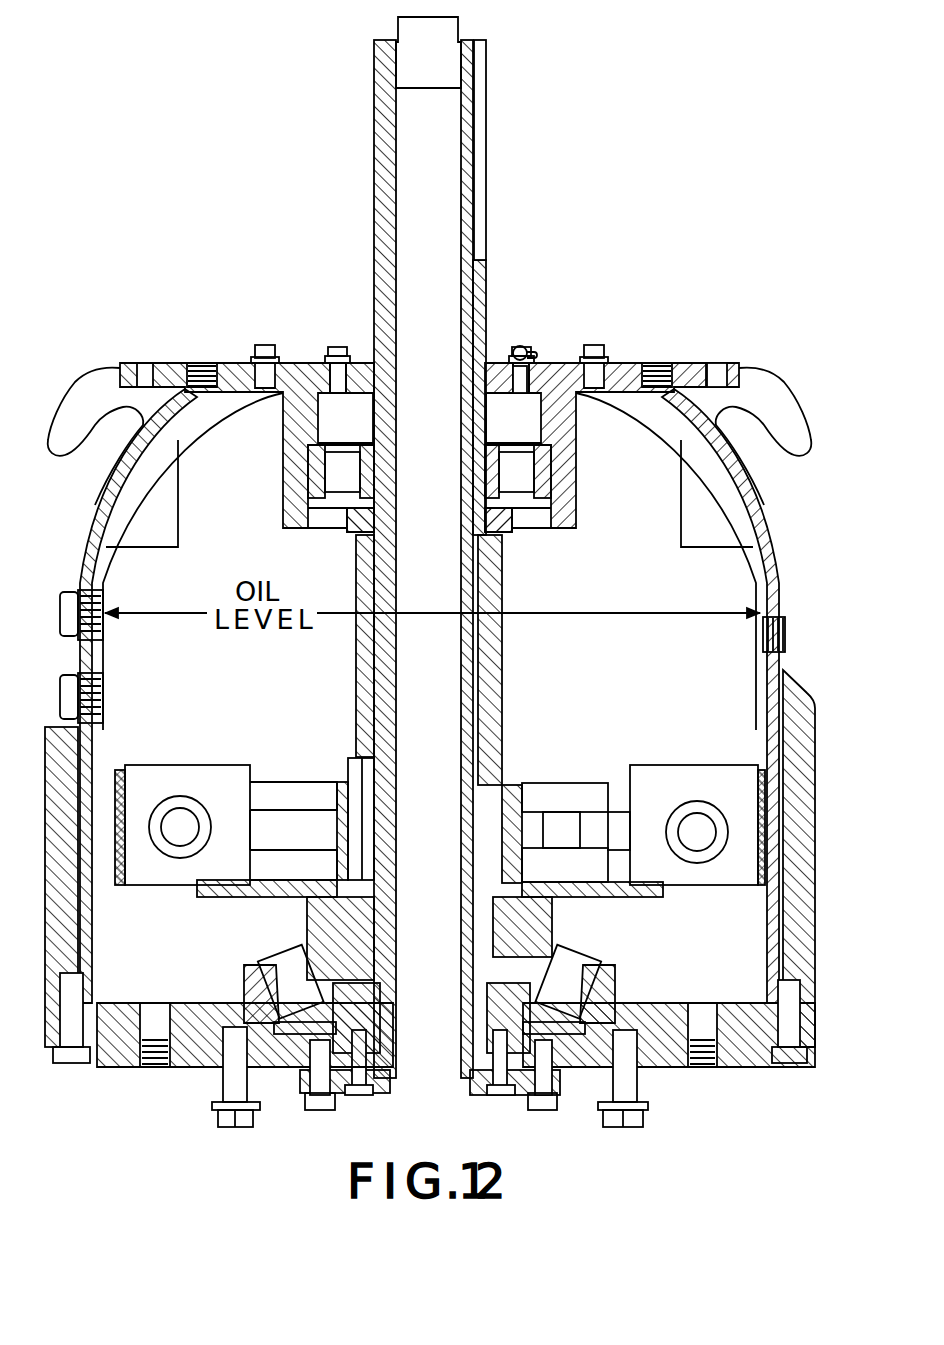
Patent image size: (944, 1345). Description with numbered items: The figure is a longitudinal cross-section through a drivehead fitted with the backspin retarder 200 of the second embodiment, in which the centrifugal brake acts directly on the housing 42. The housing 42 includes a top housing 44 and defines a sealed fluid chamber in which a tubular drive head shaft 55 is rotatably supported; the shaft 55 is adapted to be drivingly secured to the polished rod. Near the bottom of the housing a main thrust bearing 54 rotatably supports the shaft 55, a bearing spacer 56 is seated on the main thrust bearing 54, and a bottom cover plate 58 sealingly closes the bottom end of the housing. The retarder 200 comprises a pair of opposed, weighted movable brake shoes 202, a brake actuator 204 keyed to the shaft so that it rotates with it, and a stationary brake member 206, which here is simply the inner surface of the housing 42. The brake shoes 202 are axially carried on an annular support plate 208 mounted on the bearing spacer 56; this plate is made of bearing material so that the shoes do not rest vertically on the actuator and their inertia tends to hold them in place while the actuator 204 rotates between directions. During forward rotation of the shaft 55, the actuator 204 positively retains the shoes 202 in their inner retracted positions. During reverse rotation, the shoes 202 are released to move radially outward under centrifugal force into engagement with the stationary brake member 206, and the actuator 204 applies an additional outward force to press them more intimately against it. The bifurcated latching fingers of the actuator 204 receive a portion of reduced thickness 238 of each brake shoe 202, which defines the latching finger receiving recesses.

The housing 42 is at (607, 362).
The top housing 44 is at (763, 522).
The main thrust bearing 54 is at (614, 987).
The drive head shaft 55 is at (500, 598).
The bearing spacer 56 is at (550, 920).
The bottom cover plate 58 is at (198, 1067).
The backspin retarder 200 is at (282, 785).
The brake shoes 202 is at (145, 775).
The brake actuator 204 is at (513, 785).
The stationary brake member 206 is at (810, 705).
The annular support plate 208 is at (237, 895).
The portion of reduced thickness 238 is at (285, 825).